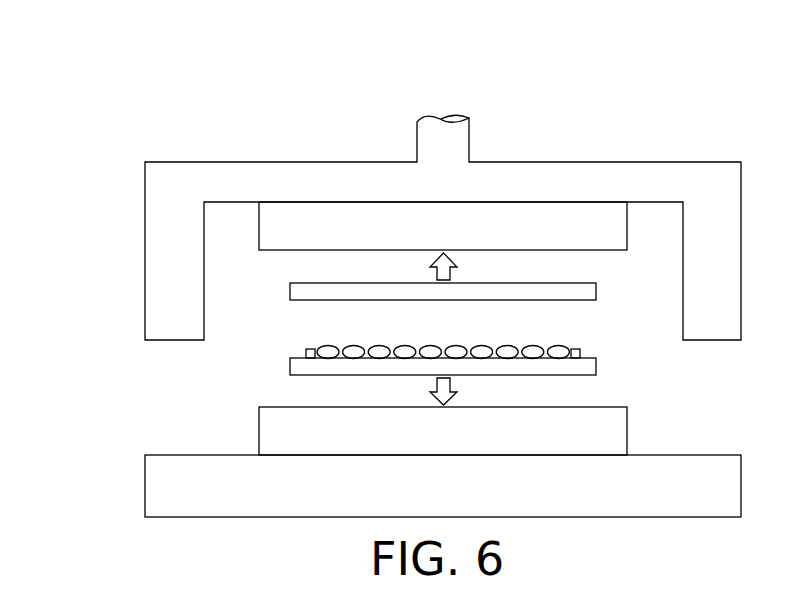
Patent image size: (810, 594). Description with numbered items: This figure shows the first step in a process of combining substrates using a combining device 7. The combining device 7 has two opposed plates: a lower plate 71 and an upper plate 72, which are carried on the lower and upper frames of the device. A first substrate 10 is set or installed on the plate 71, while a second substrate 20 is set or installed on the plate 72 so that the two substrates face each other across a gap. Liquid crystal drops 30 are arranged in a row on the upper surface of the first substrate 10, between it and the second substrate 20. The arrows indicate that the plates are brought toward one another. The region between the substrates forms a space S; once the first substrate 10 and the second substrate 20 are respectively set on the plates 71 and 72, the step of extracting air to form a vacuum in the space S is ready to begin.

The combining device 7 is at (43, 49).
The space S is at (232, 213).
The plate 72 is at (273, 243).
The plate 71 is at (265, 430).
The second substrate 20 is at (596, 291).
The first substrate 10 is at (596, 365).
The liquid crystal drops 30 is at (555, 352).